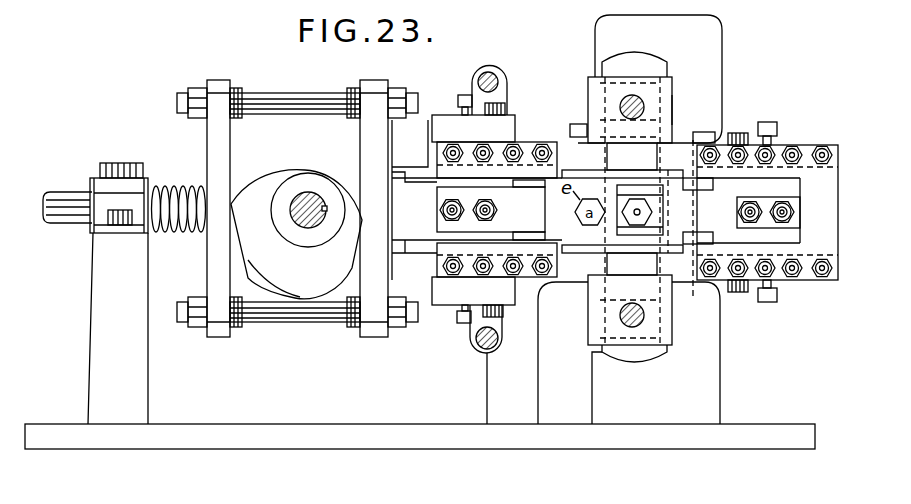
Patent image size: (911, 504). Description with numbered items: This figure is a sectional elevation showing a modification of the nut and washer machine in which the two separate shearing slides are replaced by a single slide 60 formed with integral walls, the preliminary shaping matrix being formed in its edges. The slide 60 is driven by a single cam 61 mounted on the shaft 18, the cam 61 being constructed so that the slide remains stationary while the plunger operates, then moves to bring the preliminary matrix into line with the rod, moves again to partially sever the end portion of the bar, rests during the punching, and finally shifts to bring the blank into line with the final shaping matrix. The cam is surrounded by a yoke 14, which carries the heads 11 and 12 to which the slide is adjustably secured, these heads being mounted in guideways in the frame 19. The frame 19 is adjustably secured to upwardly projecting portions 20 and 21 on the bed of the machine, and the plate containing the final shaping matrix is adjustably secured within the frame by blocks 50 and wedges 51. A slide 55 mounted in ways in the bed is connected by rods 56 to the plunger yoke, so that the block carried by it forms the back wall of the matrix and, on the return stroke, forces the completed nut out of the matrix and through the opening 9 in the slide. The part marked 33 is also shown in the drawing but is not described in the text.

The opening 9 is at (652, 226).
The head 11 is at (790, 237).
The head 12 is at (418, 170).
The yoke 14 is at (213, 148).
The shaft 18 is at (307, 196).
The frame 19 is at (672, 103).
The upwardly projecting portion 20 is at (712, 77).
The upwardly projecting portion 21 is at (490, 386).
The clamp arm 33 is at (486, 78).
The block 50 is at (620, 150).
The wedge 51 is at (578, 124).
The slide 55 is at (618, 62).
The rod 56 is at (625, 101).
The single slide 60 is at (562, 217).
The cam 61 is at (298, 283).